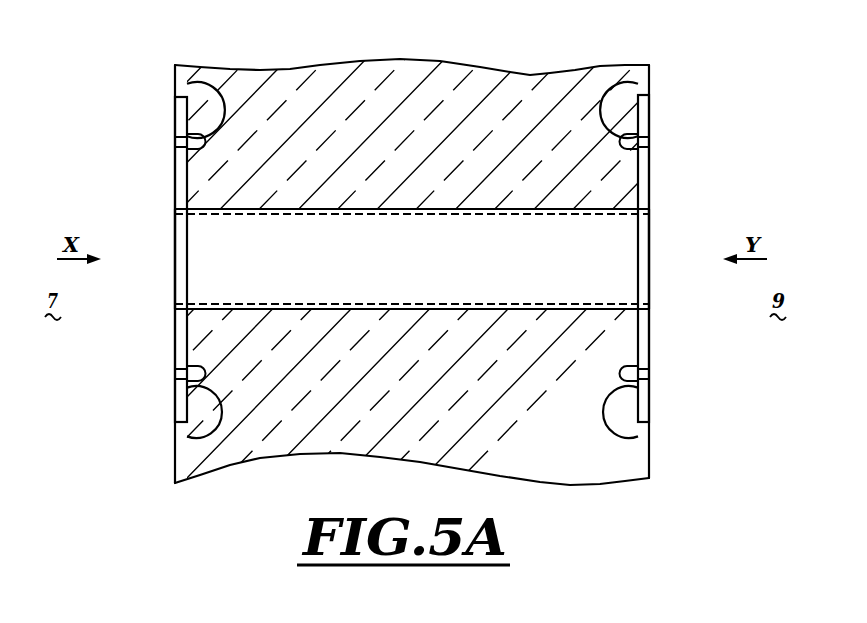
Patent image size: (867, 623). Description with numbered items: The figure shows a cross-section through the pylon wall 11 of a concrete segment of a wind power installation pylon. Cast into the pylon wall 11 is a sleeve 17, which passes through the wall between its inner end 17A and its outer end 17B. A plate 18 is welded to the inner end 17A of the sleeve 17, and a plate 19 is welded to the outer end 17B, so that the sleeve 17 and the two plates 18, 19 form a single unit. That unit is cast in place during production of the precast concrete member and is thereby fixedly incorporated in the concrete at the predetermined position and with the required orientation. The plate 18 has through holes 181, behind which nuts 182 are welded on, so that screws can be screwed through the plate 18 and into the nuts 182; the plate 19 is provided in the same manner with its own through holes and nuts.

The pylon wall 11 is at (421, 70).
The sleeve 17 is at (407, 286).
The inner end of sleeve 17A is at (180, 263).
The outer end of sleeve 17B is at (642, 263).
The plate 18 is at (180, 355).
The plate 19 is at (645, 355).
The through hole 181 is at (185, 140).
The nut 182 is at (197, 82).